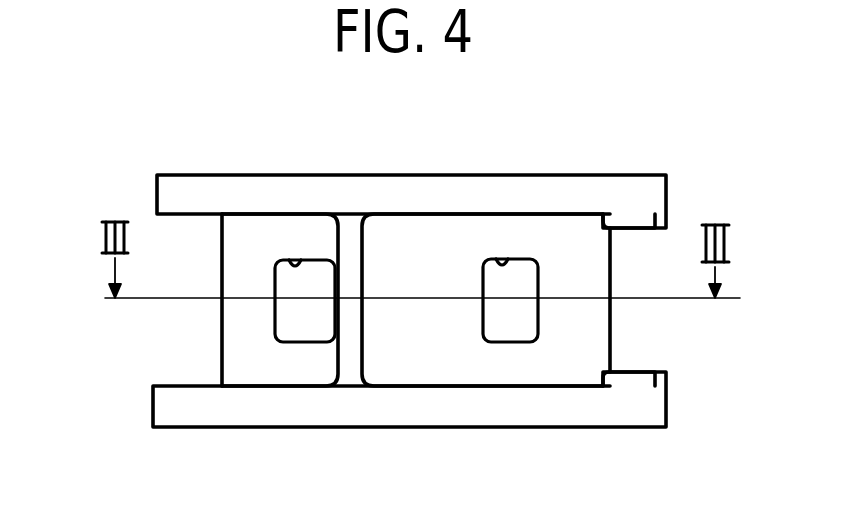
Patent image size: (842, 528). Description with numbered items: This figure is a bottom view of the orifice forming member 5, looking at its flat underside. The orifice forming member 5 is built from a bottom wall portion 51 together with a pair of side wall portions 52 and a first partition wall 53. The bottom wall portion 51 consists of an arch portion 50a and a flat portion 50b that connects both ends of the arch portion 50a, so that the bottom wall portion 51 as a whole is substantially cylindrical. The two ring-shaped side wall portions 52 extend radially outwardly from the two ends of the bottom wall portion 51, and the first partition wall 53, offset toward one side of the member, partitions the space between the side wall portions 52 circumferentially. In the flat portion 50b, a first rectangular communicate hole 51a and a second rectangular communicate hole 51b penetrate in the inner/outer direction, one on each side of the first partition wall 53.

The orifice forming member 5 is at (219, 158).
The arch portion 50a is at (577, 362).
The flat portion 50b is at (260, 357).
The bottom wall portion 51 is at (425, 347).
The first rectangular communicate hole 51a is at (294, 260).
The second rectangular communicate hole 51b is at (495, 258).
The side wall portions 52 is at (556, 192).
The first partition wall 53 is at (353, 246).